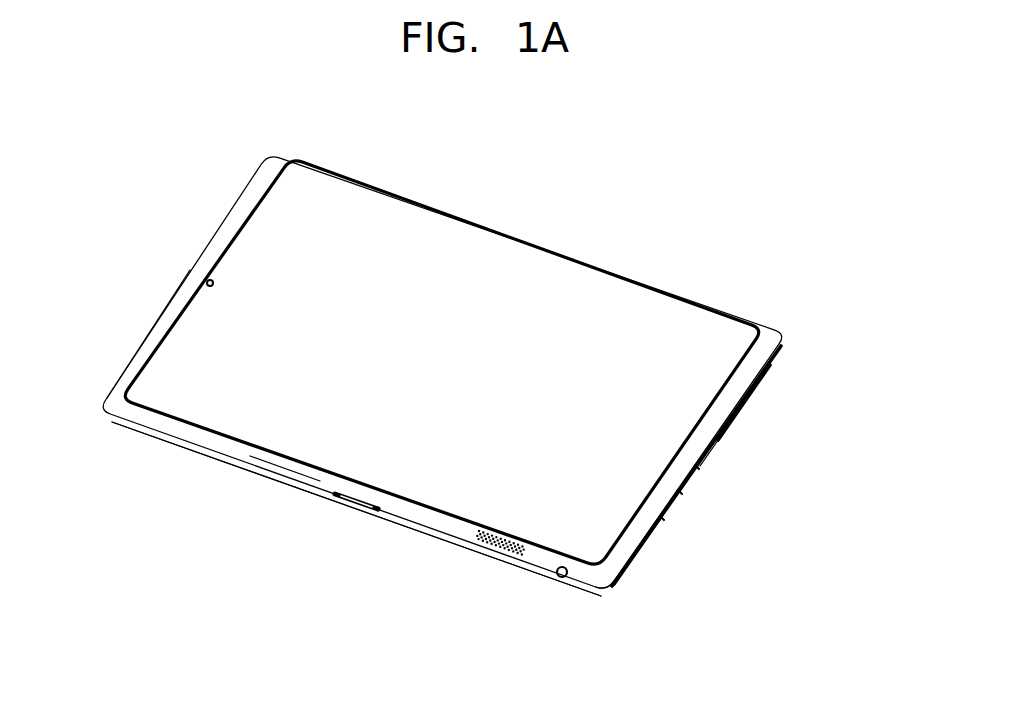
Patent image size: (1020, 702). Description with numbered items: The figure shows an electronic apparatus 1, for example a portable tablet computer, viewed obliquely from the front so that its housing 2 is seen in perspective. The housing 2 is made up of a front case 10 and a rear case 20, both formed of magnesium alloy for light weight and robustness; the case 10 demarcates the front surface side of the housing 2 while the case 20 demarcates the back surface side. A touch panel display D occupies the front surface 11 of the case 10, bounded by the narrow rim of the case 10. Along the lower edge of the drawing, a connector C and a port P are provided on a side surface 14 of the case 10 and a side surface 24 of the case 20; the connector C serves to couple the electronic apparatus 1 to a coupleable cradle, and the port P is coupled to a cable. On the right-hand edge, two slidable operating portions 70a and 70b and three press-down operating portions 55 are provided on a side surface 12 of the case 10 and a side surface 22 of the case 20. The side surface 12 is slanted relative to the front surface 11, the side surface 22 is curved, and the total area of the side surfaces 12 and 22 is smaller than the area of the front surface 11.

The electronic apparatus 1 is at (698, 253).
The housing 2 is at (158, 438).
The front case 10 is at (740, 375).
The front surface 11 is at (128, 375).
The side surface 12 is at (733, 405).
The side surface 14 is at (303, 477).
The rear case 20 is at (457, 542).
The side surface 22 is at (623, 572).
The side surface 24 is at (388, 514).
The operating portions 55 is at (697, 467).
The operating portion 70a is at (640, 550).
The operating portion 70b is at (717, 440).
The connector C is at (340, 505).
The touch panel display D is at (453, 483).
The port P is at (560, 577).